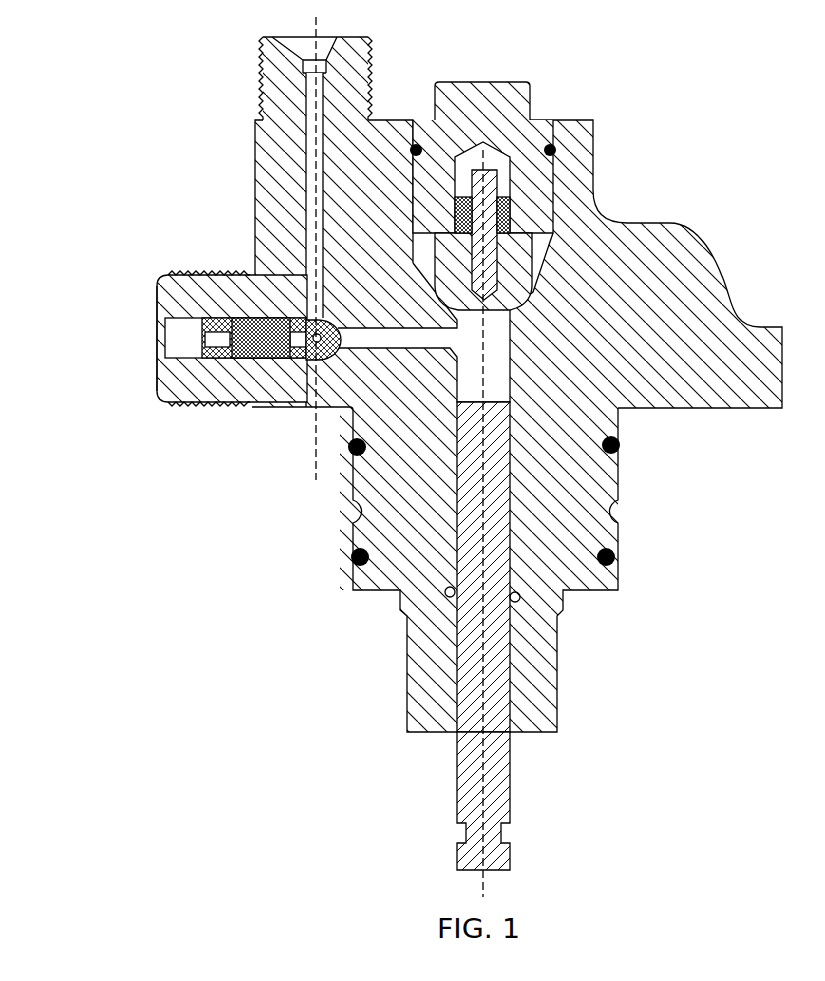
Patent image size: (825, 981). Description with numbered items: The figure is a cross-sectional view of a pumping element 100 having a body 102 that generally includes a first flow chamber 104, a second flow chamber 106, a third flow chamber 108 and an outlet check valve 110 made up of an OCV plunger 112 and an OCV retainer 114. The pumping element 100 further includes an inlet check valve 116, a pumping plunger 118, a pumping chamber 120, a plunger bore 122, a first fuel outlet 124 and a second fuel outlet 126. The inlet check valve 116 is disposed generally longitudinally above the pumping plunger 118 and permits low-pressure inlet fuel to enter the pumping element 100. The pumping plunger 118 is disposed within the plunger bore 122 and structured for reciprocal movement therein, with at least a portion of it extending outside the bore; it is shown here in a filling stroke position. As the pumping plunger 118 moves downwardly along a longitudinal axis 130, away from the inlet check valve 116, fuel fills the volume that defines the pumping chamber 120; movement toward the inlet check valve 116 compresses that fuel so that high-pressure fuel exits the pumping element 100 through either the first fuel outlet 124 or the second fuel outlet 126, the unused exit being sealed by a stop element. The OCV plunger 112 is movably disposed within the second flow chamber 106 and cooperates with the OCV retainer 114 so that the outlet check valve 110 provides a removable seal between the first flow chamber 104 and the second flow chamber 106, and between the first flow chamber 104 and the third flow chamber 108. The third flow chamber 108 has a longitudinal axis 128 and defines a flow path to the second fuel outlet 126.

The pumping element 100 is at (436, 456).
The body 102 is at (485, 374).
The first flow chamber 104 is at (412, 345).
The second flow chamber 106 is at (198, 332).
The third flow chamber 108 is at (303, 118).
The outlet check valve 110 is at (249, 377).
The OCV plunger 112 is at (262, 318).
The OCV retainer 114 is at (222, 360).
The inlet check valve 116 is at (528, 150).
The pumping plunger 118 is at (512, 790).
The pumping chamber 120 is at (500, 378).
The plunger bore 122 is at (505, 668).
The first fuel outlet 124 is at (157, 336).
The second fuel outlet 126 is at (322, 44).
The longitudinal axis 128 is at (303, 33).
The longitudinal axis 130 is at (486, 884).